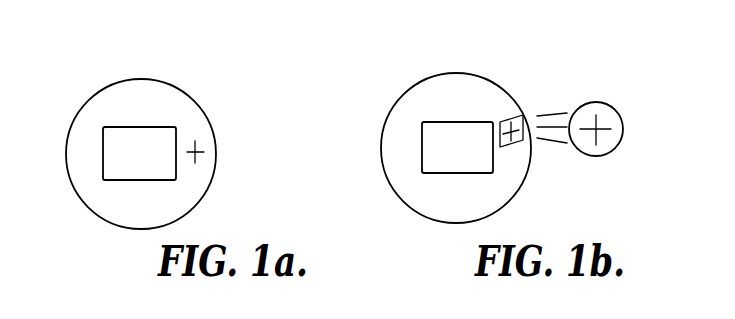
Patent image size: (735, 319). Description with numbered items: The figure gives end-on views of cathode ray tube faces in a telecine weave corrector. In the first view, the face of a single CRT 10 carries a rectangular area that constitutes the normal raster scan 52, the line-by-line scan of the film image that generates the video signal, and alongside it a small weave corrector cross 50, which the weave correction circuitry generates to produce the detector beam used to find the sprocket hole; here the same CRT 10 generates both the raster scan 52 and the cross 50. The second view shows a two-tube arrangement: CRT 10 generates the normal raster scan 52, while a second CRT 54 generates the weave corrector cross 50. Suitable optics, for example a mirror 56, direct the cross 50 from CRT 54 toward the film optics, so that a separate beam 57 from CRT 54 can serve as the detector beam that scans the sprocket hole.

In FIG. 1B, the CRT 10 is at (404, 207).
In FIG. 1A, the weave corrector cross 50 is at (278, 109).
In FIG. 1B, the weave corrector cross 50 is at (600, 136).
In FIG. 1A, the normal raster scan 52 is at (160, 105).
In FIG. 1B, the normal raster scan 52 is at (453, 122).
In FIG. 1B, the CRT 54 is at (611, 104).
In FIG. 1B, the mirror 56 is at (522, 117).
In FIG. 1B, the separate beam 57 is at (575, 88).